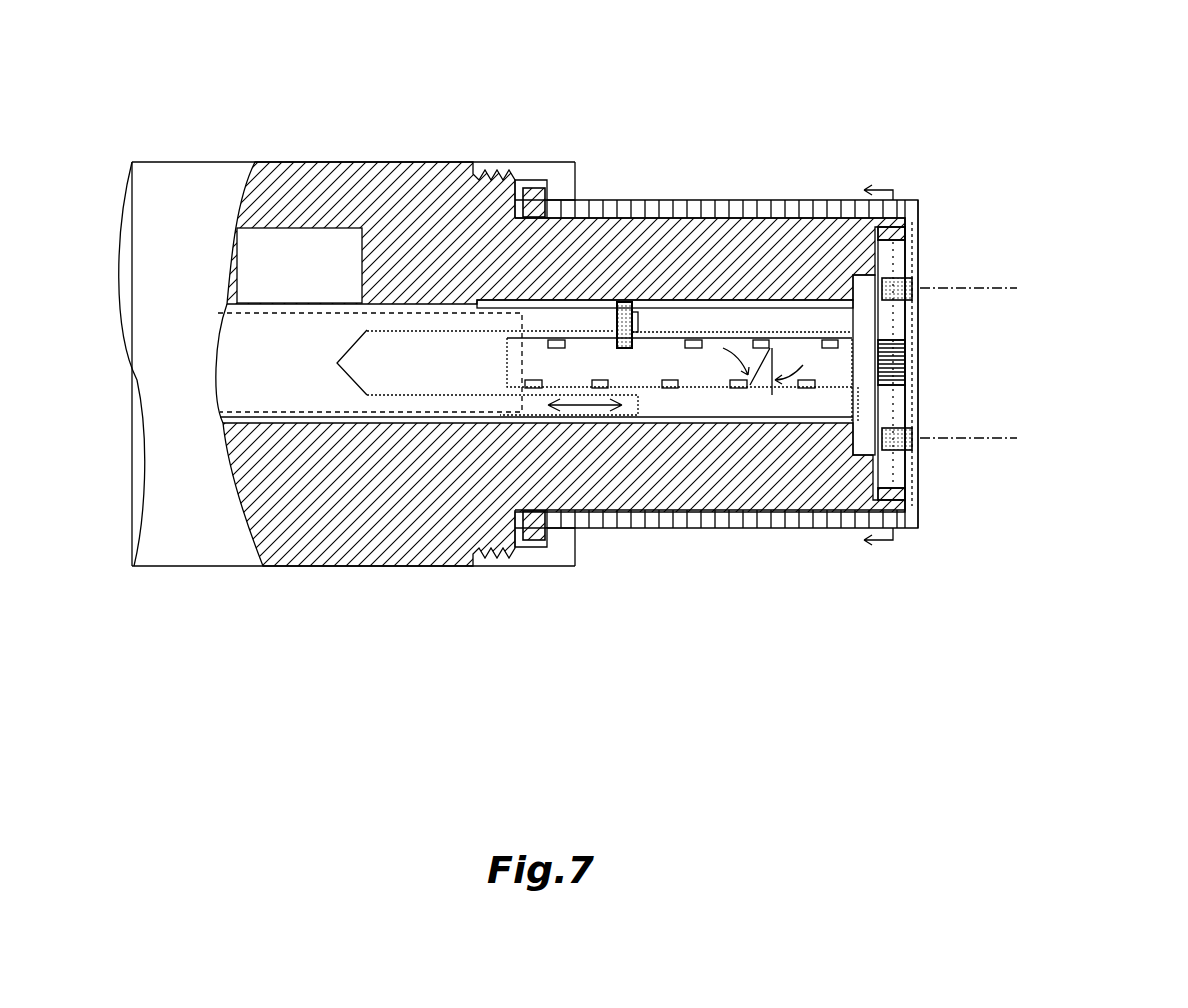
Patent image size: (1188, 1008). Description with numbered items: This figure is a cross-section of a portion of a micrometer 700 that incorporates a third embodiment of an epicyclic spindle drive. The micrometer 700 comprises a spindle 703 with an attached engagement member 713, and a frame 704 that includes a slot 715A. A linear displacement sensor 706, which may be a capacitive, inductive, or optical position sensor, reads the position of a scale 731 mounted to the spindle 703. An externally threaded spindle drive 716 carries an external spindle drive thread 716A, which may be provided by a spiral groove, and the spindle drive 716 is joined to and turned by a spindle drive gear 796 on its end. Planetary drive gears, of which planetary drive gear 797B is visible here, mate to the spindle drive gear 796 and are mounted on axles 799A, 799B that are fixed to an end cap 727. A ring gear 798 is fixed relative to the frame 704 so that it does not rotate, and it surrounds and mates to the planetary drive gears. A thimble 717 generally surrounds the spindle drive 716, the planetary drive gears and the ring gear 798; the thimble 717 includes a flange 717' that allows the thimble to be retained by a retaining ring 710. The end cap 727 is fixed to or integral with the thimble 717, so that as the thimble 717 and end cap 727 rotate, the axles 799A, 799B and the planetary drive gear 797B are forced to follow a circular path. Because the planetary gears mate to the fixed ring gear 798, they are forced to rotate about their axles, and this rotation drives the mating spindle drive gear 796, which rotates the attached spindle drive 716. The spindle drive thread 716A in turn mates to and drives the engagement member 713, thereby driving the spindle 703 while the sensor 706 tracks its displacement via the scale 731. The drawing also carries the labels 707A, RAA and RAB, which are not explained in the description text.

The micrometer 700 is at (1098, 77).
The spindle 703 is at (300, 417).
The frame 704 is at (282, 185).
The linear displacement sensor 706 is at (343, 237).
The retaining ring 710 is at (530, 170).
The engagement member 713 is at (622, 302).
The slot 715A is at (727, 302).
The spindle drive 716 is at (653, 378).
The external spindle drive thread 716A is at (668, 388).
The thimble 717 is at (794, 338).
The flange 717' is at (599, 349).
The end cap 727 is at (917, 390).
The scale 731 is at (268, 395).
The spindle drive gear 796 is at (913, 350).
The planetary drive gear 797B is at (895, 473).
The ring gear 798 is at (917, 208).
The axle 799A is at (913, 287).
The axle 799B is at (913, 433).
The upper collimator 707A is at (900, 253).
The reference axis A RAA is at (1017, 288).
The reference axis B RAB is at (1017, 438).